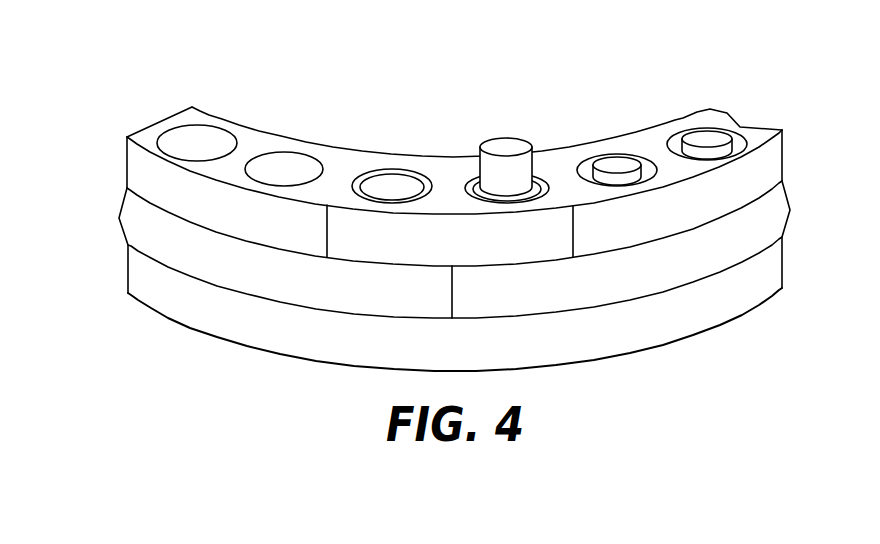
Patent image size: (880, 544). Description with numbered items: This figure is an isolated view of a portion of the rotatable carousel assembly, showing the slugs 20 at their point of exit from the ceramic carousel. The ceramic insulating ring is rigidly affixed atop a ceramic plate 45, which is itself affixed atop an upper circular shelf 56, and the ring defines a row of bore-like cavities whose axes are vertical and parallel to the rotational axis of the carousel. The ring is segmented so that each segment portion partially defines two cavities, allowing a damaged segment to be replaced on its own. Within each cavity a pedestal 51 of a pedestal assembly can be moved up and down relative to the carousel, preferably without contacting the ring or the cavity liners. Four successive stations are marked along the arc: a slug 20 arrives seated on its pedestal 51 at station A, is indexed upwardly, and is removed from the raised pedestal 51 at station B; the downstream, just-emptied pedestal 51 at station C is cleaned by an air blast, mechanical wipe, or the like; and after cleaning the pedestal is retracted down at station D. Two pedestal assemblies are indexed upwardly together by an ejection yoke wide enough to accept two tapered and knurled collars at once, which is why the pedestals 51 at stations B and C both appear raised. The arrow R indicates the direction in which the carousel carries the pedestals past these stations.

The ceramic plate 45 is at (121, 160).
The upper circular shelf 56 is at (121, 270).
The slug 20 is at (508, 148).
The pedestal 51 is at (390, 182).
The station A is at (615, 108).
The station B is at (505, 108).
The station C is at (393, 108).
The station D is at (283, 108).
The direction of rotation R is at (393, 127).